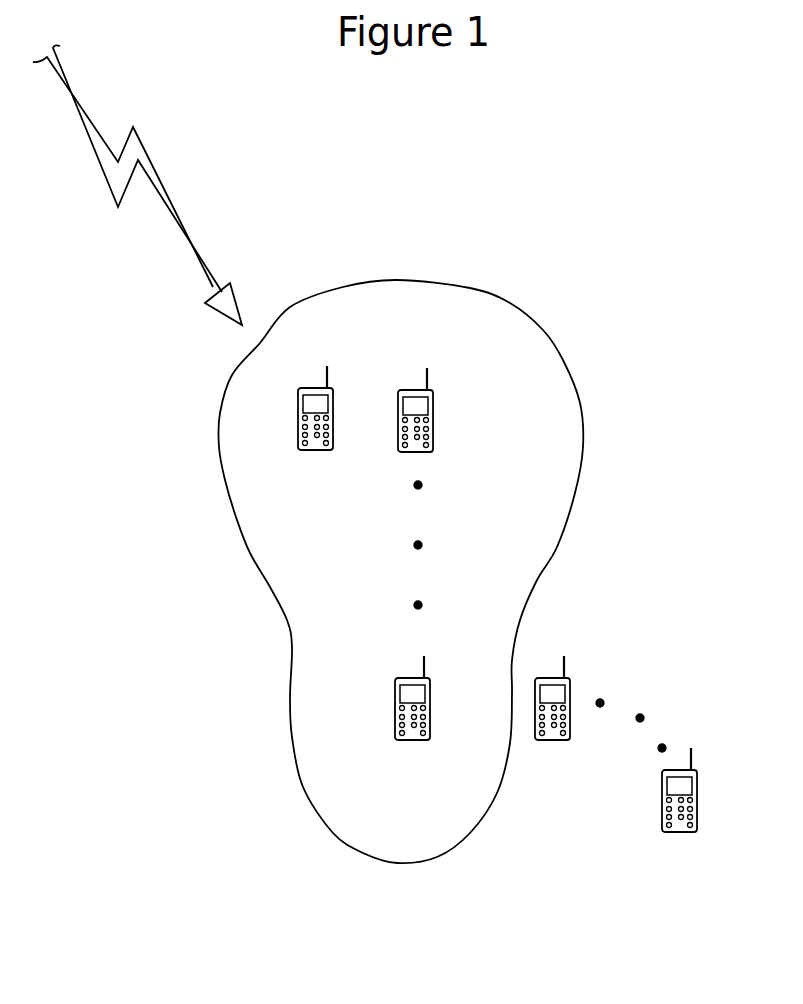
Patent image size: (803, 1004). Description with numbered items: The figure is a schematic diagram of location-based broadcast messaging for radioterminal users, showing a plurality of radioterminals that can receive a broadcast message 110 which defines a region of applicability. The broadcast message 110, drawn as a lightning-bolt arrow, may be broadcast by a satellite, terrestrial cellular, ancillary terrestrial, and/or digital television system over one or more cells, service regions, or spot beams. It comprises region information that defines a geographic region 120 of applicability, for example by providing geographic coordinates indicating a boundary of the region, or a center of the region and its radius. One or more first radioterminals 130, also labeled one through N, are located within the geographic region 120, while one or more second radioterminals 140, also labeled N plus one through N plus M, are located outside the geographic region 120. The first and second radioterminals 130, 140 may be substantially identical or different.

The broadcast message 110 is at (180, 217).
The geographic region 120 is at (546, 334).
The first radioterminals 130 is at (415, 455).
The second radioterminals 140 is at (552, 740).